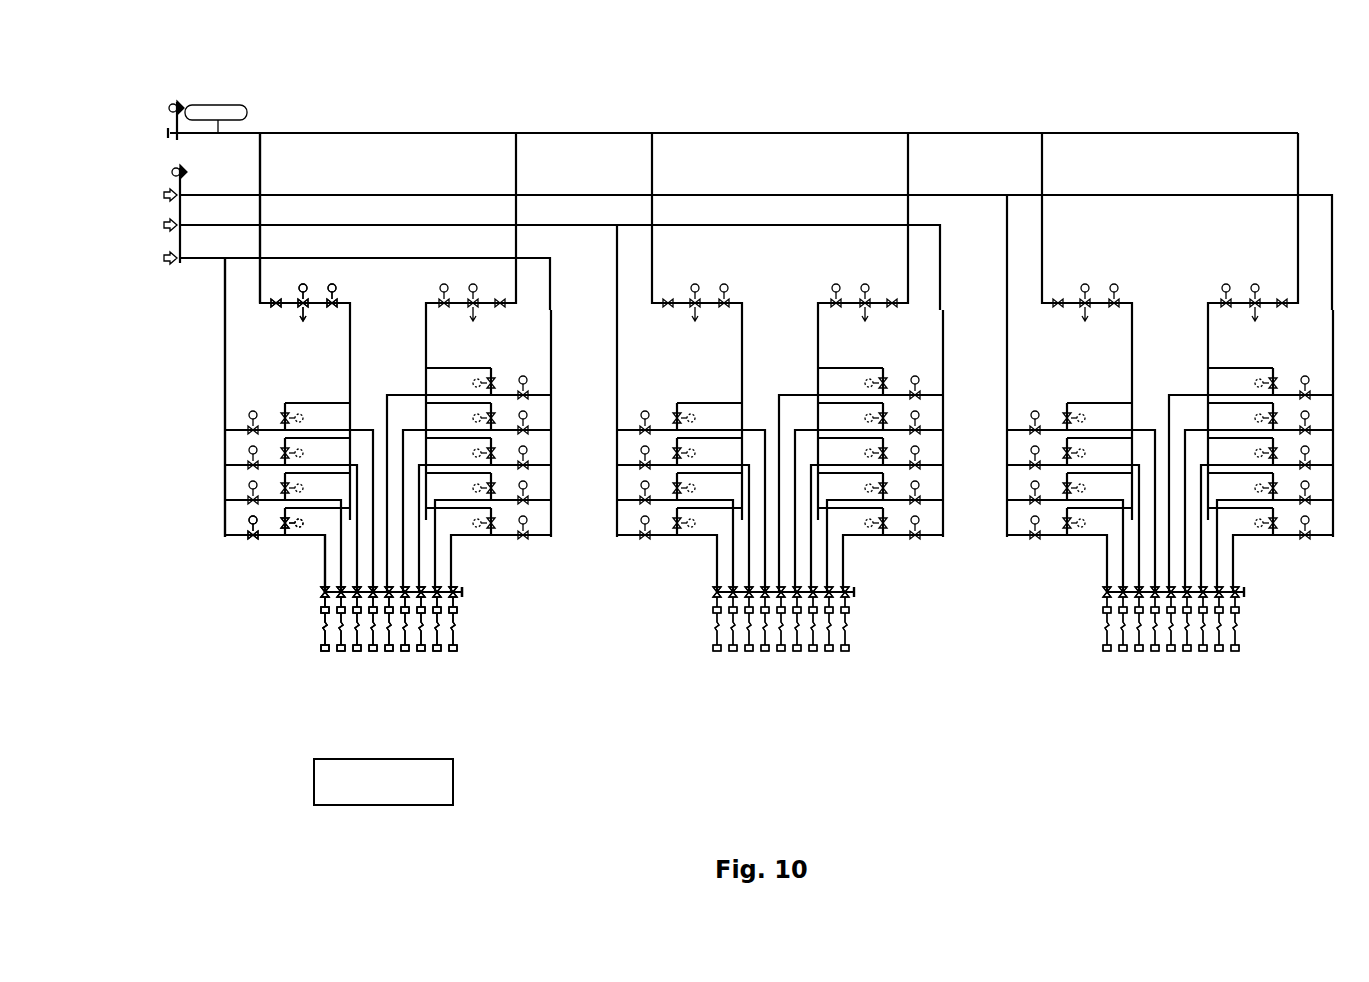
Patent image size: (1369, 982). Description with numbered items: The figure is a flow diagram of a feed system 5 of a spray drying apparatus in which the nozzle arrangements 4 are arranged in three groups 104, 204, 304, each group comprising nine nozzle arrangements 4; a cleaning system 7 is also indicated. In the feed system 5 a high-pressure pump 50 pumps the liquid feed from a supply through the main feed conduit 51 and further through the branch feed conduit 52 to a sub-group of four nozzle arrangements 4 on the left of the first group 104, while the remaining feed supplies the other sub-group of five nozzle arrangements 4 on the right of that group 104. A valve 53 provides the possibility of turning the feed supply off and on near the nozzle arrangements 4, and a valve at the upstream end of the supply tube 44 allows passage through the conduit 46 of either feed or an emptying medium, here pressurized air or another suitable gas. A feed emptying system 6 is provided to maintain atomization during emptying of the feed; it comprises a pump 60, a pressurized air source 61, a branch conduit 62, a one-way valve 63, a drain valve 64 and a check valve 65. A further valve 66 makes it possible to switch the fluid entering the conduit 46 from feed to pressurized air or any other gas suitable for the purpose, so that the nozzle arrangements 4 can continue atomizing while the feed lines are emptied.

The pump 60 is at (170, 106).
The feed emptying system 6 is at (280, 97).
The pressurized air source 61 is at (242, 113).
The branch conduit 62 is at (262, 165).
The feed system 5 is at (168, 178).
The high-pressure pump 50 is at (163, 258).
The main feed conduit 51 is at (205, 262).
The branch feed conduit 52 is at (225, 380).
The one-way valve 63 is at (275, 308).
The drain valve 64 is at (300, 312).
The check valve 65 is at (343, 300).
The valve 53 is at (253, 542).
The further valve 66 is at (285, 537).
The conduit 46 is at (325, 575).
The supply tube 44 is at (325, 606).
The nozzle arrangement 4 is at (306, 650).
The group of nozzle arrangements 104 is at (373, 662).
The group of nozzle arrangements 204 is at (765, 662).
The group of nozzle arrangements 304 is at (1157, 662).
The cleaning system 7 is at (340, 783).